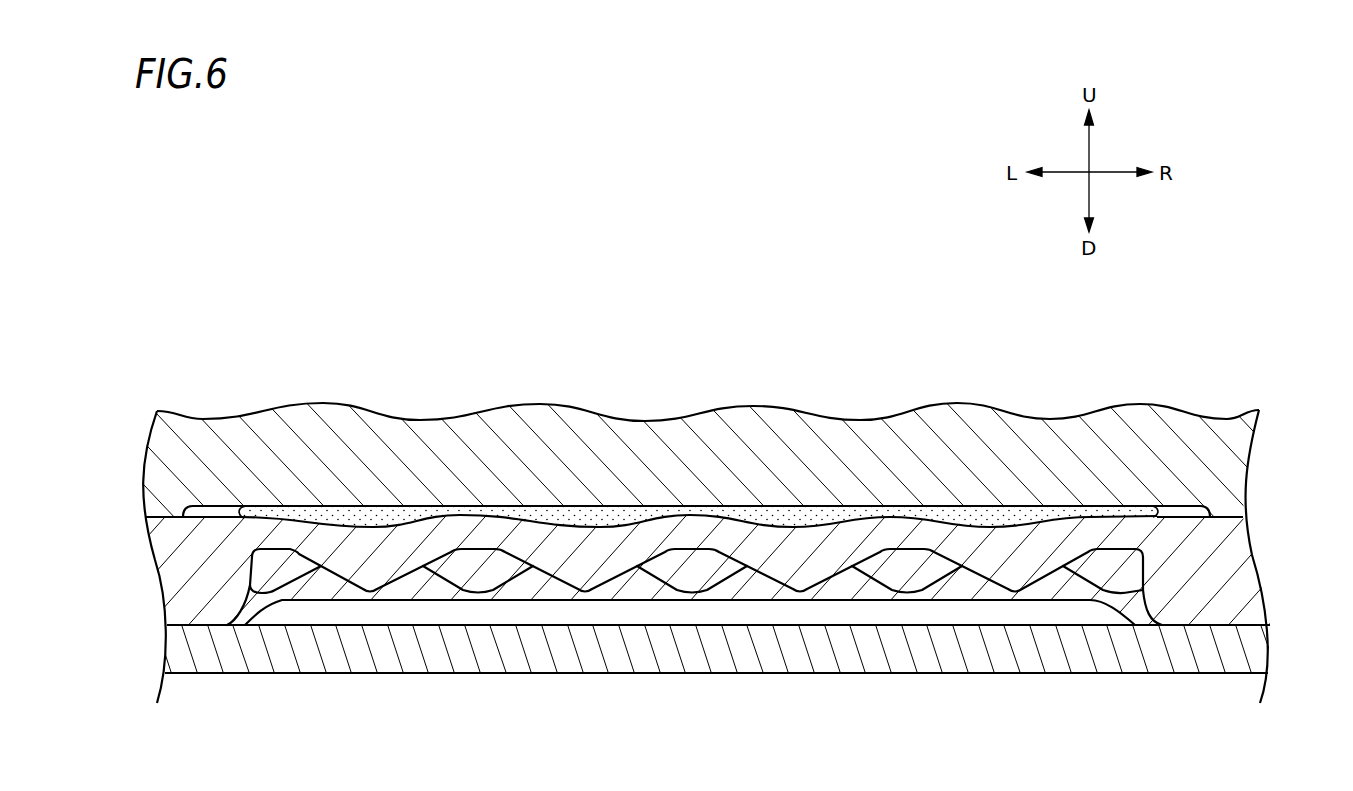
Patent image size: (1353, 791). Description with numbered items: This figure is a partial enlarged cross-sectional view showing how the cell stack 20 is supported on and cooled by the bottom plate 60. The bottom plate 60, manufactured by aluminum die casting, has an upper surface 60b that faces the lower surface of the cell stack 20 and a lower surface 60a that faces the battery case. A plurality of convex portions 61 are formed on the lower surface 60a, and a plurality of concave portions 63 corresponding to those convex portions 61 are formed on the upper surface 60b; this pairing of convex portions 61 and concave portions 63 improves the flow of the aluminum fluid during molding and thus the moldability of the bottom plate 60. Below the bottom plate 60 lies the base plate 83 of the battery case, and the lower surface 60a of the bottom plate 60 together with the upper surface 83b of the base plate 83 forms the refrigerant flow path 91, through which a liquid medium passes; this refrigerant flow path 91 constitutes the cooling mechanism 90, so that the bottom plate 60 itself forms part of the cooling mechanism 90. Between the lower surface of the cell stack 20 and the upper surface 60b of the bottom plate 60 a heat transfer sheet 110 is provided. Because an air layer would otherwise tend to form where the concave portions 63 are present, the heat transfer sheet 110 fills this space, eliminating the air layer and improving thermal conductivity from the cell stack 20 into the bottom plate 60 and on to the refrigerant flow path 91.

The cell stack 20 is at (631, 433).
The heat transfer sheet 110 is at (728, 504).
The upper surface of the bottom plate 60b is at (552, 505).
The concave portions 63 is at (808, 522).
The lower surface of the bottom plate 60a is at (901, 554).
The bottom plate 60 is at (1230, 546).
The convex portions 61 is at (686, 578).
The refrigerant flow path 91 is at (317, 606).
The cooling mechanism 90 is at (690, 668).
The base plate 83 is at (750, 652).
The upper surface of the base plate 83b is at (832, 619).